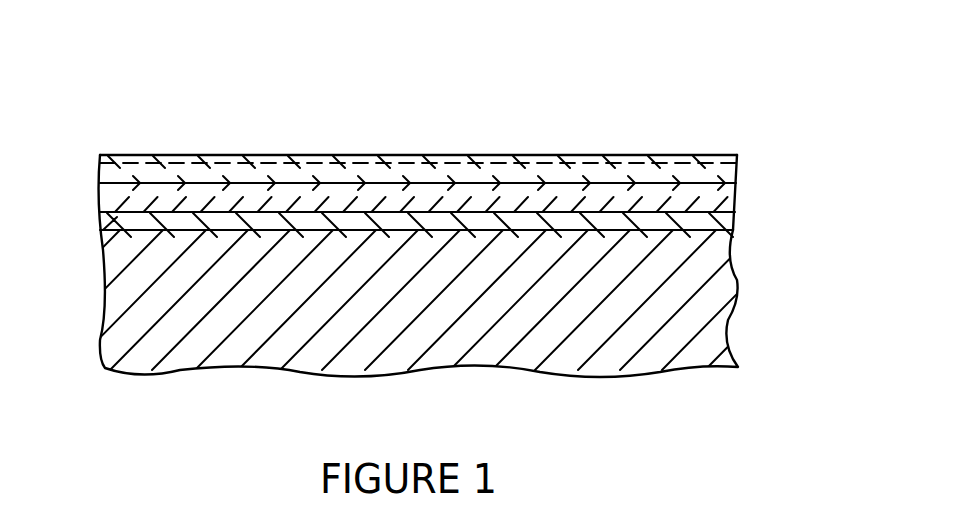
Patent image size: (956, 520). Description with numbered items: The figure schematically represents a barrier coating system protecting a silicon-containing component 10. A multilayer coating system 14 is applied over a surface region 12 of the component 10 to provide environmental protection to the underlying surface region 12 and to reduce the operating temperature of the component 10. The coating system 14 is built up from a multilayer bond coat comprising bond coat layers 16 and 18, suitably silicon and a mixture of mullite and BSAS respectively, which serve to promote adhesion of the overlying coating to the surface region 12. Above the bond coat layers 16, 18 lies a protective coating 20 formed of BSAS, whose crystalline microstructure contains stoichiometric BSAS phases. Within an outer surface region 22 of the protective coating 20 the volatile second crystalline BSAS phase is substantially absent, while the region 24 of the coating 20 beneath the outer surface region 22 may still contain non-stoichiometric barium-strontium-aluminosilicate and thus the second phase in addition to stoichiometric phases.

The silicon-containing component 10 is at (157, 81).
The surface region 12 is at (128, 320).
The multilayer coating system 14 is at (78, 155).
The bond coat layer 16 is at (443, 221).
The bond coat layer 18 is at (216, 204).
The outer surface region 22 is at (636, 157).
The protective coating 20 is at (752, 171).
The region of the coating beneath the outer surface region 24 is at (742, 176).